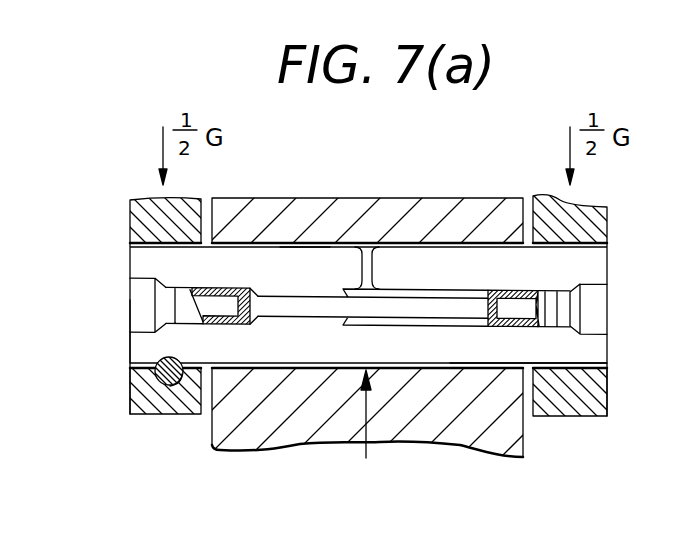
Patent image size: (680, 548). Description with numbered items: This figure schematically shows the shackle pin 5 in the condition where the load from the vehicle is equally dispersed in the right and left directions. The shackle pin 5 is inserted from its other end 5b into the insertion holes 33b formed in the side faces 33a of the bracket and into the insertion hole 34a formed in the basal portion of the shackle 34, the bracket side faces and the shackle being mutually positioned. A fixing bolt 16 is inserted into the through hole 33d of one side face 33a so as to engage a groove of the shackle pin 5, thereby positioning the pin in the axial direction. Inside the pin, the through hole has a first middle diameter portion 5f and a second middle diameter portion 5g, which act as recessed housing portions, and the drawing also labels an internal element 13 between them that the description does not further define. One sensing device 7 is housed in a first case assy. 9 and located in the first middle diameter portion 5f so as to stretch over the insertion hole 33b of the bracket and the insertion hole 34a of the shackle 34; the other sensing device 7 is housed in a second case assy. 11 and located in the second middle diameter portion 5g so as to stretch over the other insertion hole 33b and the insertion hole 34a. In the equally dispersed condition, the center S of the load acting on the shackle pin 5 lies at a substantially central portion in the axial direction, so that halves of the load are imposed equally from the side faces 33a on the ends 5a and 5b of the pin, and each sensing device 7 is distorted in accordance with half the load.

The shackle pin 5 is at (612, 279).
The one end of the shackle pin 5a is at (130, 346).
The other end of the shackle pin 5b is at (607, 363).
The first middle diameter portion 5f is at (170, 324).
The second middle diameter portion 5g is at (568, 329).
The sensing device 7 is at (220, 303).
The first case assy. 9 is at (188, 288).
The second case assy. 11 is at (543, 323).
The piston body 13 is at (423, 307).
The fixing bolt 16 is at (158, 388).
The side face of the yoke bracket 33a is at (138, 383).
The insertion hole 33b is at (163, 250).
The through hole 33d is at (171, 395).
The shackle 34 is at (453, 445).
The insertion hole of the shackle 34a is at (302, 252).
The center of the load S is at (366, 432).